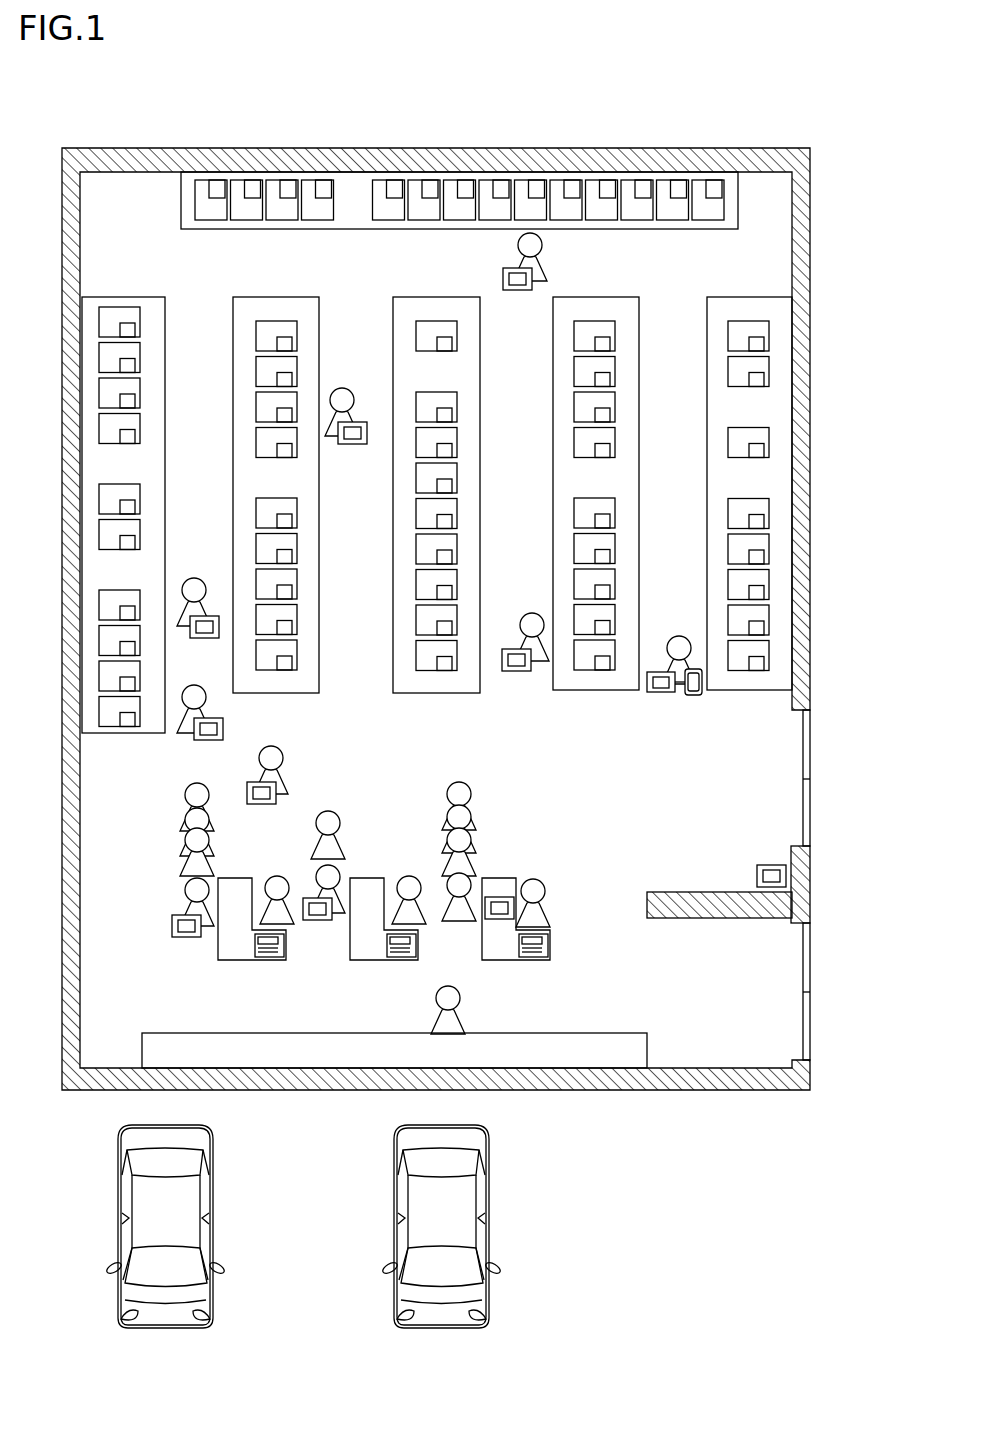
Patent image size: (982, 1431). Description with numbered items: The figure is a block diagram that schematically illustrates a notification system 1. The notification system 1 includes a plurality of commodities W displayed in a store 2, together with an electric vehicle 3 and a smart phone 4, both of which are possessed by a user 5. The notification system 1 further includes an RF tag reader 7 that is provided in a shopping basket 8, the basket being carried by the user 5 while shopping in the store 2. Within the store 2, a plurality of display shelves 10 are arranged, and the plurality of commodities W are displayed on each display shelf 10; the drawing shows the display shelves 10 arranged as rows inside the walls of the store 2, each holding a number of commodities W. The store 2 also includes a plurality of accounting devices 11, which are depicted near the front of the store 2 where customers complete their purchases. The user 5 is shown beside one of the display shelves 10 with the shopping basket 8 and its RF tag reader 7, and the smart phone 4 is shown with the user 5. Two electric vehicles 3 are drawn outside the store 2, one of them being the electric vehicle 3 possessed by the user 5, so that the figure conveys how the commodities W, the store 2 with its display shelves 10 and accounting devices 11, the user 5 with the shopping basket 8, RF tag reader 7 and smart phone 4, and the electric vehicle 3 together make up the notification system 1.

The notification system 1 is at (455, 109).
The store 2 is at (628, 148).
The electric vehicle 3 is at (489, 1218).
The smart phone 4 is at (705, 687).
The user 5 is at (692, 648).
The RF tag reader 7 is at (756, 522).
The shopping basket 8 is at (649, 694).
The display shelf 10 is at (320, 363).
The accounting device 11 is at (277, 960).
The commodity W is at (743, 504).